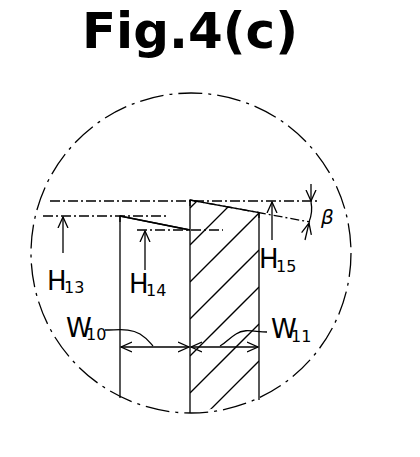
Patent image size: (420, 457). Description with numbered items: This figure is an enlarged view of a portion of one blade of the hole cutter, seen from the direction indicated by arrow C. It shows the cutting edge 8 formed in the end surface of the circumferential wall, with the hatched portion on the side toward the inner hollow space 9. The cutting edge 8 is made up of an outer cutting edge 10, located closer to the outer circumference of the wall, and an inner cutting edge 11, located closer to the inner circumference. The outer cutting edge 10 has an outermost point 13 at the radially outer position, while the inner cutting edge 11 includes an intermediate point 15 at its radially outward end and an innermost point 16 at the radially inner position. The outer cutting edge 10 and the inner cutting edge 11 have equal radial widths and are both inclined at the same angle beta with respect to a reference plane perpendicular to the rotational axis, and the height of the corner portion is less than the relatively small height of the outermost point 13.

The cutting edge 8 is at (120, 217).
The inner hollow space 9 is at (259, 378).
The outer cutting edge 10 is at (157, 222).
The inner cutting edge 11 is at (238, 203).
The outermost point 13 is at (120, 216).
The intermediate point 15 is at (190, 200).
The innermost point 16 is at (257, 203).
The arrow C (viewing direction) C is at (303, 133).